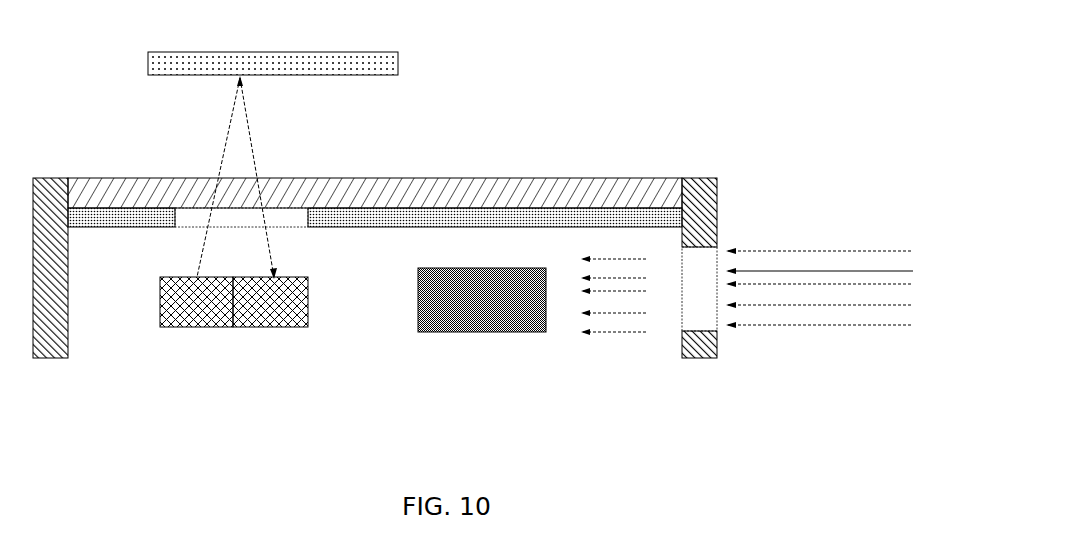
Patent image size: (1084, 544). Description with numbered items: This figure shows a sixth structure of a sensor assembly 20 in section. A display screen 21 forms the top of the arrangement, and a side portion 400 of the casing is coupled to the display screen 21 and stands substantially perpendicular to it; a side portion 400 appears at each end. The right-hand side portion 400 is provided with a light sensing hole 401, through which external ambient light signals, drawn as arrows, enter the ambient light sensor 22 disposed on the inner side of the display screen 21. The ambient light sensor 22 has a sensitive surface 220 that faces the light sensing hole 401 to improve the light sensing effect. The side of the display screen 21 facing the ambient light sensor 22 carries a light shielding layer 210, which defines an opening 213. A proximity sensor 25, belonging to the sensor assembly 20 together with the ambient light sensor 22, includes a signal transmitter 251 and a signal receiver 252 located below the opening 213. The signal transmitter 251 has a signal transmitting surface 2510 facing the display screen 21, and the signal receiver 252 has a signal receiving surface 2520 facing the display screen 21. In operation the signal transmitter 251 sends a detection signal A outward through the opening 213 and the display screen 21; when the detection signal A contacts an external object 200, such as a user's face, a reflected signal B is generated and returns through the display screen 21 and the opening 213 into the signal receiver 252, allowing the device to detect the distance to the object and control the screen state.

The external object 200 is at (305, 52).
The detection signal A is at (225, 134).
The reflected signal B is at (254, 156).
The side portion 400 is at (412, 268).
The light sensing hole 401 is at (695, 295).
The display screen 21 is at (396, 178).
The light shielding layer 210 is at (483, 208).
The opening 213 is at (286, 208).
The sensor assembly 20 is at (333, 339).
The proximity sensor 25 is at (230, 339).
The signal transmitter 251 is at (155, 318).
The signal transmitting surface 2510 is at (163, 275).
The signal receiver 252 is at (303, 317).
The signal receiving surface 2520 is at (298, 277).
The ambient light sensor 22 is at (468, 328).
The sensitive surface 220 is at (546, 300).